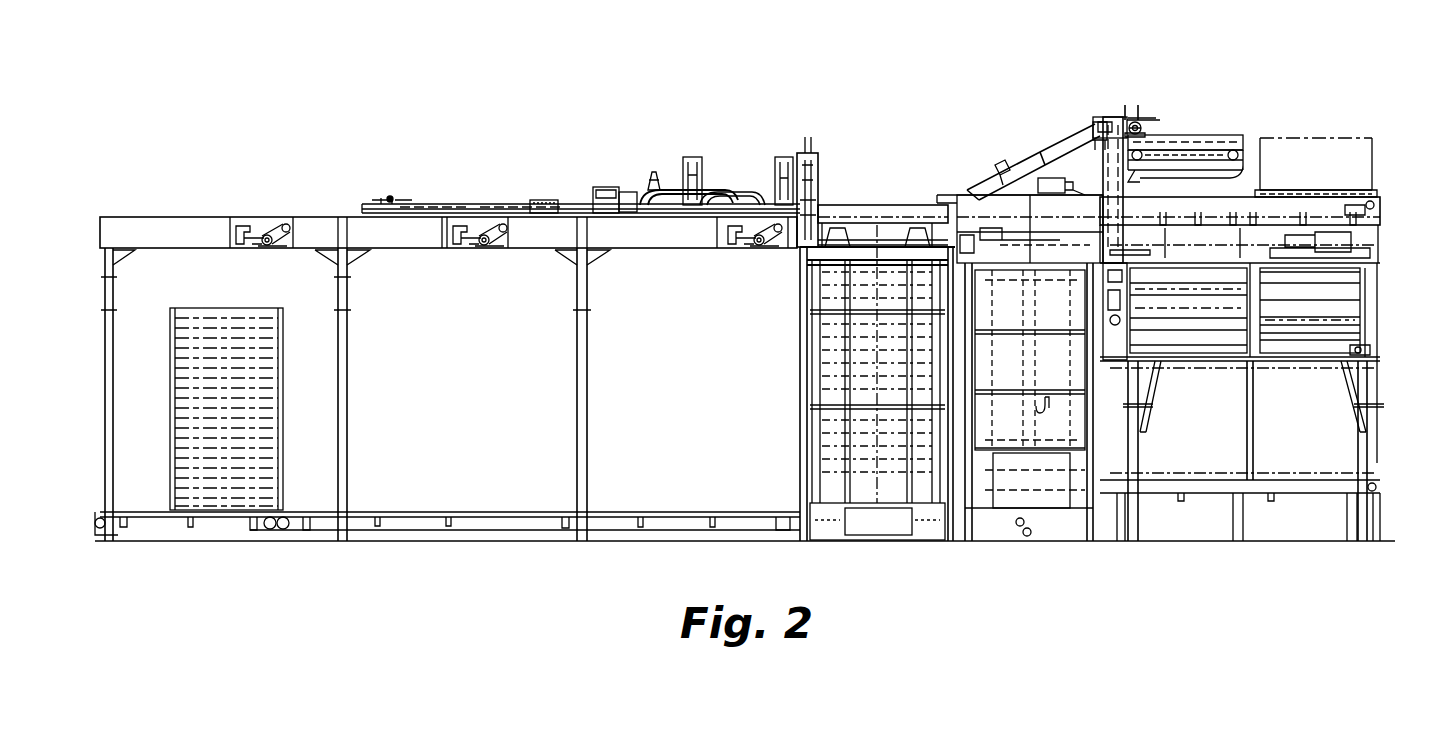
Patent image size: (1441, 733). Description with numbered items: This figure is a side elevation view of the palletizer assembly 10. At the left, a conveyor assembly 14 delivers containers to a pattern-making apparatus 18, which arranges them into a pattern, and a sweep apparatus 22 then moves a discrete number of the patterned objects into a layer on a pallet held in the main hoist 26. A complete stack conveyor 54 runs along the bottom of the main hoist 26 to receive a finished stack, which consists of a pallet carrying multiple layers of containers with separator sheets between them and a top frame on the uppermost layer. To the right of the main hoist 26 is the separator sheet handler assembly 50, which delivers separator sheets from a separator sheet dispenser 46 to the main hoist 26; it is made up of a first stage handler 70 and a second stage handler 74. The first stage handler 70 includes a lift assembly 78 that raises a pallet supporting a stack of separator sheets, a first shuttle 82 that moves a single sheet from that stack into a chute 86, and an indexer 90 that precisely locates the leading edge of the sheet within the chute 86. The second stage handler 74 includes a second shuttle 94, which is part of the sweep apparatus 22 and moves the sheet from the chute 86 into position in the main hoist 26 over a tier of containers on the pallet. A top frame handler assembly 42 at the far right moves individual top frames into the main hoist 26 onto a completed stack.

The palletizer assembly 10 is at (600, 102).
The conveyor assembly 14 is at (350, 223).
The pattern-making apparatus 18 is at (518, 197).
The sweep apparatus 22 is at (739, 148).
The second stage handler 74 is at (824, 143).
The second shuttle 94 is at (819, 187).
The complete stack conveyor 54 is at (676, 508).
The main hoist 26 is at (785, 373).
The indexer 90 is at (972, 178).
The chute 86 is at (1032, 168).
The first stage handler 70 is at (1080, 127).
The separator sheet handler assembly 50 is at (1112, 92).
The first shuttle 82 is at (1166, 113).
The lift assembly 78 is at (1165, 168).
The separator sheet dispenser 46 is at (1383, 150).
The top frame handler assembly 42 is at (1388, 250).